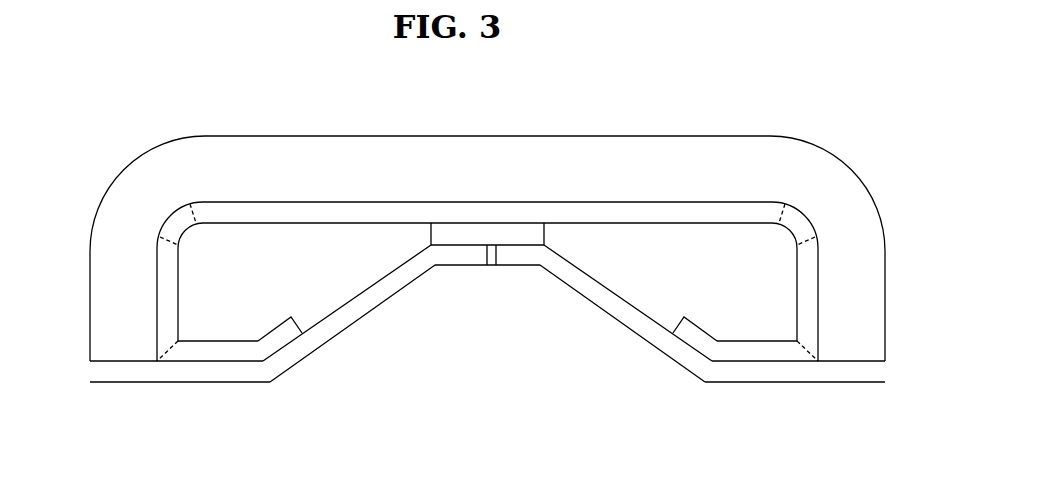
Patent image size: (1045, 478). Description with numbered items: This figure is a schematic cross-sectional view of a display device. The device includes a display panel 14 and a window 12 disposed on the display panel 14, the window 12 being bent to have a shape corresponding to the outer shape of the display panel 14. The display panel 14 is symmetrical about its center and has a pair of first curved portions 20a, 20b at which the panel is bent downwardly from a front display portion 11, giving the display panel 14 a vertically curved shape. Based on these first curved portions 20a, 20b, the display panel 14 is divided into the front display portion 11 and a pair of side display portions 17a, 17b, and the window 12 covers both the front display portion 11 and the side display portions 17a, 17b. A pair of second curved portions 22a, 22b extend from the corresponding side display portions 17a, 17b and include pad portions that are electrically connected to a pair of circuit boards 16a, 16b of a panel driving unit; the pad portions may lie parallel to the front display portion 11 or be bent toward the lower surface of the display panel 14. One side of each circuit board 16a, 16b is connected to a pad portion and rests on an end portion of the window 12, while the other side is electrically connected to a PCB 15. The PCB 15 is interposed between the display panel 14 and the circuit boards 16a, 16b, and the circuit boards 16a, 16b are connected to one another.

The front display portion 11 is at (332, 213).
The window 12 is at (485, 172).
The display panel 14 is at (645, 213).
The PCB 15 is at (513, 235).
The circuit board 16a is at (465, 258).
The circuit board 16b is at (615, 309).
The side display portion 17a is at (167, 302).
The side display portion 17b is at (808, 302).
The first curved portion 20a is at (177, 222).
The first curved portion 20b is at (798, 223).
The second curved portion 22a is at (217, 350).
The second curved portion 22b is at (757, 352).